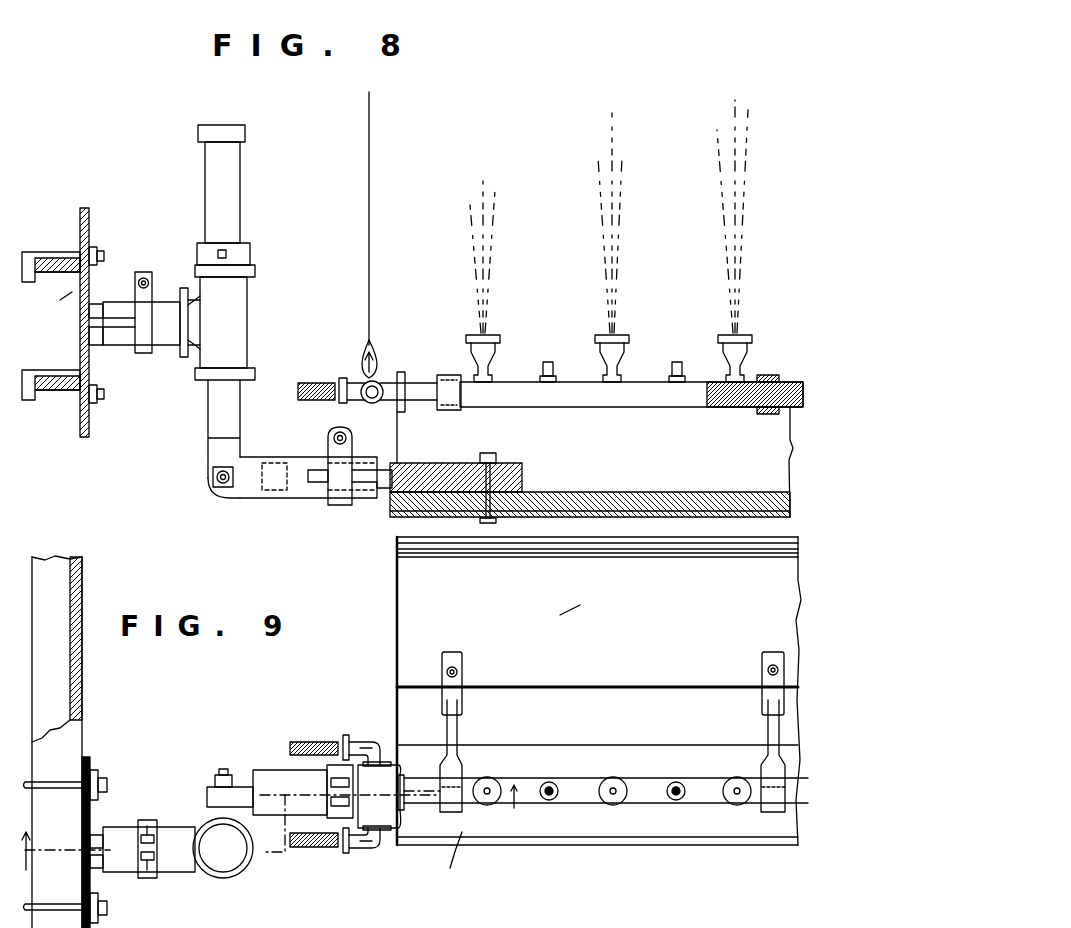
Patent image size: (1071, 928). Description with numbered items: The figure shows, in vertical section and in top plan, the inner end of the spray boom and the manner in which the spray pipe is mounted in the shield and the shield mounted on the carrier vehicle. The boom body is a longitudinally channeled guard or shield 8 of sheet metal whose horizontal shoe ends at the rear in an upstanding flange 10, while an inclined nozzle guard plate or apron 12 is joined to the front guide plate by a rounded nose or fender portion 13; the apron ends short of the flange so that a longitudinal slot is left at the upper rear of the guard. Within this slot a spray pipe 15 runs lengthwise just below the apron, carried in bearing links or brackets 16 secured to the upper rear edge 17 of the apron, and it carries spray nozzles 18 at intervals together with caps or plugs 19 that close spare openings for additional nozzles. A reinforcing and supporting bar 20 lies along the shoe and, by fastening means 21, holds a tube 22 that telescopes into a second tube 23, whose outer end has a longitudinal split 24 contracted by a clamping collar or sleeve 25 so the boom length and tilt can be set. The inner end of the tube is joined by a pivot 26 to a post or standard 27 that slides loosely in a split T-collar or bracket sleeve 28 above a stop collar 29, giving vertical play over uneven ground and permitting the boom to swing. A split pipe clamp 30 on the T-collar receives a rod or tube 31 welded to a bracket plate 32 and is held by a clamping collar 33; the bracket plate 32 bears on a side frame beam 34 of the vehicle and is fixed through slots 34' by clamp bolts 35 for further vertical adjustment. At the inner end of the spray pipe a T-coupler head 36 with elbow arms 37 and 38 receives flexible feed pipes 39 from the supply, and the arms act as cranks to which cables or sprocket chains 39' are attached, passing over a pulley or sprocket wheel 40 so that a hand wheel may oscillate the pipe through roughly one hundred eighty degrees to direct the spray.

In FIG. 8, the guard or shield 8 is at (410, 430).
In FIG. 9, the guard or shield 8 is at (400, 636).
In FIG. 9, the upstanding flange 10 is at (276, 846).
In FIG. 9, the nozzle guard plate or apron 12 is at (603, 621).
In FIG. 9, the nose or fender portion 13 is at (600, 543).
In FIG. 8, the spray pipe 15 is at (626, 400).
In FIG. 9, the spray pipe 15 is at (606, 782).
In FIG. 9, the bearing links or brackets 16 is at (462, 724).
In FIG. 9, the upper rear edge of the apron 17 is at (590, 687).
In FIG. 8, the spray nozzles 18 is at (618, 346).
In FIG. 9, the spray nozzles 18 is at (616, 786).
In FIG. 8, the caps or plugs 19 is at (550, 368).
In FIG. 9, the caps or plugs 19 is at (682, 789).
In FIG. 8, the reinforcing and supporting bar 20 is at (604, 492).
In FIG. 9, the reinforcing and supporting bar 20 is at (612, 832).
In FIG. 8, the fastening means 21 is at (426, 461).
In FIG. 8, the tube 22 is at (394, 493).
In FIG. 8, the second tube 23 is at (290, 452).
In FIG. 9, the second tube 23 is at (268, 778).
In FIG. 8, the longitudinal split 24 is at (318, 480).
In FIG. 8, the clamping collar or sleeve 25 is at (340, 492).
In FIG. 9, the clamping collar or sleeve 25 is at (330, 765).
In FIG. 8, the pivot 26 is at (216, 497).
In FIG. 8, the post or standard 27 is at (228, 212).
In FIG. 9, the post or standard 27 is at (230, 860).
In FIG. 8, the split T-collar or bracket sleeve 28 is at (240, 318).
In FIG. 8, the stop collar 29 is at (248, 250).
In FIG. 8, the split tube or pipe clamp 30 is at (172, 348).
In FIG. 9, the split tube or pipe clamp 30 is at (178, 828).
In FIG. 8, the rod or tube 31 is at (97, 310).
In FIG. 9, the rod or tube 31 is at (95, 840).
In FIG. 8, the bracket plate 32 is at (90, 225).
In FIG. 9, the bracket plate 32 is at (88, 765).
In FIG. 8, the clamping collar 33 is at (142, 345).
In FIG. 9, the clamping collar 33 is at (150, 825).
In FIG. 8, the side frame beam 34 is at (48, 319).
In FIG. 9, the side frame beam 34 is at (83, 742).
In FIG. 8, the slots 34' is at (136, 340).
In FIG. 8, the clamp bolts 35 is at (55, 252).
In FIG. 9, the clamp bolts 35 is at (110, 802).
In FIG. 9, the T-coupler head 36 is at (380, 778).
In FIG. 9, the elbow arm 37 is at (360, 748).
In FIG. 9, the elbow arm 38 is at (368, 858).
In FIG. 9, the feed pipes 39 is at (315, 722).
In FIG. 8, the cables or sprocket chains 39' is at (395, 235).
In FIG. 9, the pulley or sprocket wheel 40 is at (308, 848).